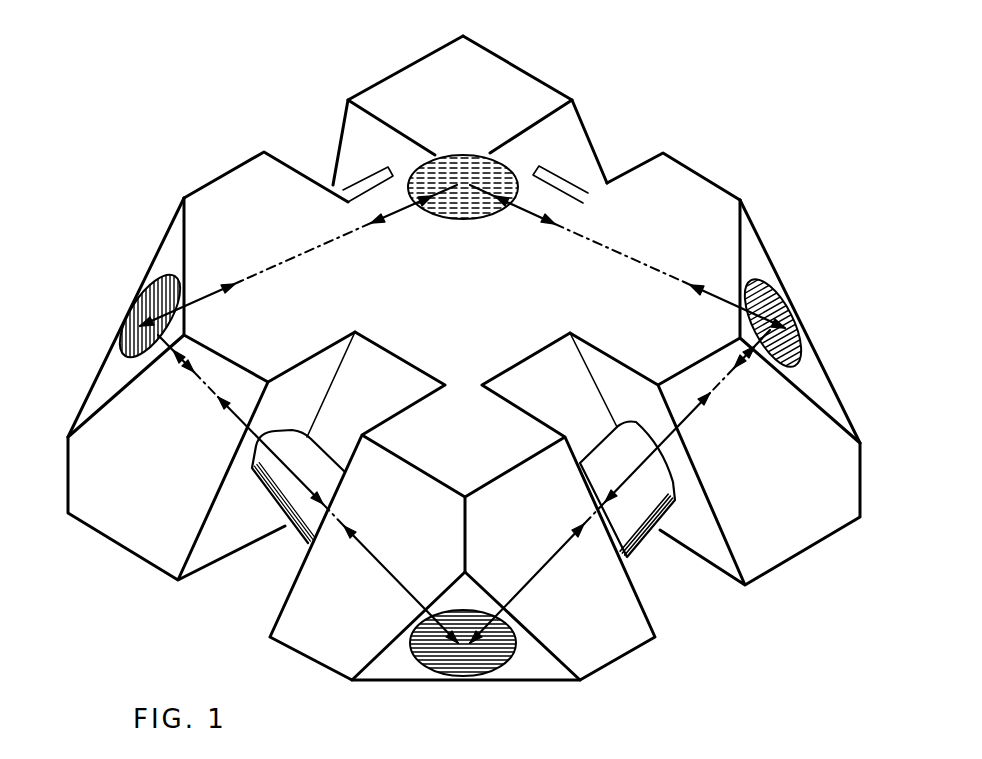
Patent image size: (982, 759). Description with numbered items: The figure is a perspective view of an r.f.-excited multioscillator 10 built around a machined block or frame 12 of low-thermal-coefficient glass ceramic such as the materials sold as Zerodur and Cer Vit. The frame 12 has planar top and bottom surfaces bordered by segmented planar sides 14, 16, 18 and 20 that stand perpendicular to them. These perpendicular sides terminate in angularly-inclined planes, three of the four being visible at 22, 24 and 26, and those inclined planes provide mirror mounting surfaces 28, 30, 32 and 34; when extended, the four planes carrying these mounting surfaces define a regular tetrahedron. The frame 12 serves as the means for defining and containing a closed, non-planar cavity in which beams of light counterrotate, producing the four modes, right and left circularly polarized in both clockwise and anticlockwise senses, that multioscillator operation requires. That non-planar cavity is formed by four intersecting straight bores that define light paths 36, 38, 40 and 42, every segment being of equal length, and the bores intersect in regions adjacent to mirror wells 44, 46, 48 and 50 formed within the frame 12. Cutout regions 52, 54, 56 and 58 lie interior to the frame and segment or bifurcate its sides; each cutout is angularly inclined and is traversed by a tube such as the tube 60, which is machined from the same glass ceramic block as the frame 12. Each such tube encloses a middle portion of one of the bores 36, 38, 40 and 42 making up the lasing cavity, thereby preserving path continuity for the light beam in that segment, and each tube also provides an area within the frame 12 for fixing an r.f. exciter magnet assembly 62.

The r.f.-excited multioscillator 10 is at (683, 100).
The frame 12 is at (738, 205).
The segmented planar side 14 is at (110, 537).
The segmented planar side 16 is at (612, 660).
The segmented planar side 18 is at (500, 55).
The segmented planar side 20 is at (215, 180).
The angularly-inclined plane 22 is at (172, 228).
The angularly-inclined plane 24 is at (383, 665).
The angularly-inclined plane 26 is at (815, 371).
The mirror mounting surface 28 is at (125, 333).
The mirror mounting surface 30 is at (463, 680).
The mirror mounting surface 32 is at (790, 320).
The mirror mounting surface 34 is at (520, 133).
The light path 36 is at (225, 408).
The light path 38 is at (700, 405).
The light path 40 is at (597, 230).
The light path 42 is at (298, 244).
The mirror well 44 is at (520, 638).
The mirror well 46 is at (768, 282).
The mirror well 48 is at (457, 200).
The mirror well 50 is at (152, 300).
The cutout region 52 is at (216, 589).
The cutout region 54 is at (681, 607).
The cutout region 56 is at (611, 151).
The cutout region 58 is at (293, 149).
The tube 60 is at (278, 487).
The r.f. exciter magnet assembly 62 is at (646, 543).